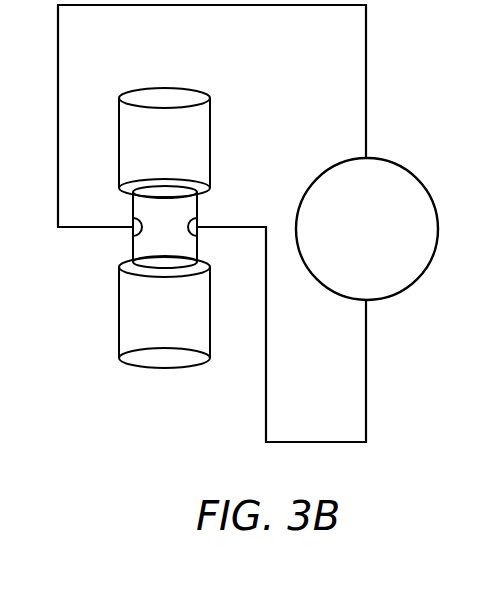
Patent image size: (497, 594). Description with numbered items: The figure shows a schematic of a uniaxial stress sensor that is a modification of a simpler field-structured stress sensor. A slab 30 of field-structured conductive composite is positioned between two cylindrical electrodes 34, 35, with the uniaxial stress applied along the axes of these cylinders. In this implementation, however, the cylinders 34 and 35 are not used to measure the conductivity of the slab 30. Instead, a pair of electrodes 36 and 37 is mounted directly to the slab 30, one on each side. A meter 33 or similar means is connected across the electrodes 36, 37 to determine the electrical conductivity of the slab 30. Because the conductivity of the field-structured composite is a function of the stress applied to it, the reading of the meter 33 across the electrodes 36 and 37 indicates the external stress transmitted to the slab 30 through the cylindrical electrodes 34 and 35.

The slab 30 is at (178, 240).
The meter 33 is at (379, 240).
The electrode 34 is at (178, 152).
The electrode 35 is at (178, 322).
The electrode 36 is at (131, 232).
The electrode 37 is at (199, 225).